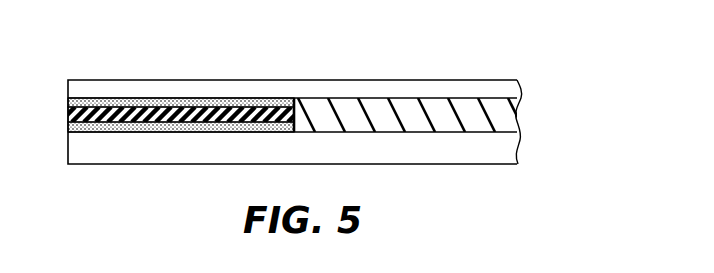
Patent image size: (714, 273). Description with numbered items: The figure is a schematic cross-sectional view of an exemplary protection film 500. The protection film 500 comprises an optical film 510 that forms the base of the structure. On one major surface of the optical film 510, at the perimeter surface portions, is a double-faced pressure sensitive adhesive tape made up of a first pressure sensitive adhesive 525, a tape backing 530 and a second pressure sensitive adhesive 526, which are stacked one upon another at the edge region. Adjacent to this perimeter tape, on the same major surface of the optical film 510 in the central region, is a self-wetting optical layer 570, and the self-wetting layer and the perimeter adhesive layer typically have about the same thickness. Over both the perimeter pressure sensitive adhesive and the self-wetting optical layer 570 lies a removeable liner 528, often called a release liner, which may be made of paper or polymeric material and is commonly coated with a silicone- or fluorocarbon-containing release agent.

The protection film 500 is at (145, 53).
The optical film 510 is at (502, 146).
The first pressure sensitive adhesive 525 is at (69, 126).
The second pressure sensitive adhesive 526 is at (173, 102).
The removeable liner 528 is at (502, 88).
The tape backing 530 is at (250, 107).
The self-wetting optical layer 570 is at (410, 108).